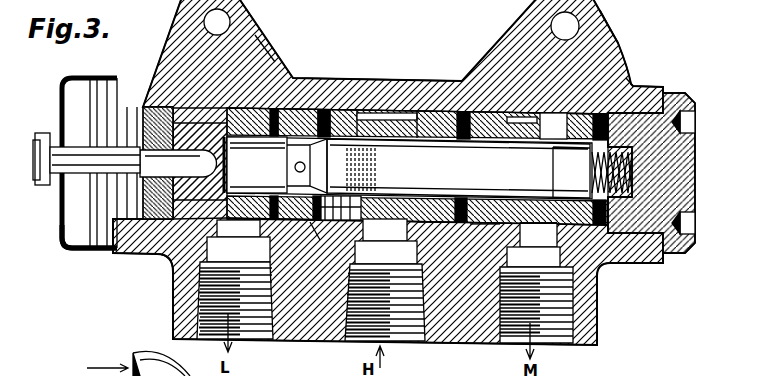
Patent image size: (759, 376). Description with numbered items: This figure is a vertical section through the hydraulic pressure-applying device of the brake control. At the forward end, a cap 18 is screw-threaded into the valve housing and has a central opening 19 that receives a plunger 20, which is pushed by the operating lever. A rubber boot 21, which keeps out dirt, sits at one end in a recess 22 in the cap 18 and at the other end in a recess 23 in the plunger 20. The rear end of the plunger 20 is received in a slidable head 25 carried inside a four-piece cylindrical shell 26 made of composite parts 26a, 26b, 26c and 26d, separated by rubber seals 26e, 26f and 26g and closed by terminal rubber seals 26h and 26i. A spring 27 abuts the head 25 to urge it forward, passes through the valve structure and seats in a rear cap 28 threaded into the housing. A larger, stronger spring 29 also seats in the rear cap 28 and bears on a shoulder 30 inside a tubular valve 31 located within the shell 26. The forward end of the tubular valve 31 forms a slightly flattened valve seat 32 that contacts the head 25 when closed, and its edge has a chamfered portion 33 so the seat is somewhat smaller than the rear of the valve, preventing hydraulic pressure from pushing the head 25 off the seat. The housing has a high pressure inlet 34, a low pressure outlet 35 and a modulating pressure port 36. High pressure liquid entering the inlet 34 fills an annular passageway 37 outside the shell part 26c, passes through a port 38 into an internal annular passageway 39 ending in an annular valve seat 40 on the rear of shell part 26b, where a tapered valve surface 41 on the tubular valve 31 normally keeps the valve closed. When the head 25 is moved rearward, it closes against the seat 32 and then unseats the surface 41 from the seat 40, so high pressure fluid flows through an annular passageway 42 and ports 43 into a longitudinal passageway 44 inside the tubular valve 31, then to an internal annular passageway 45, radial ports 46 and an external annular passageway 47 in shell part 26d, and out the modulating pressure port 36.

The cap 18 is at (143, 103).
The central opening 19 is at (100, 200).
The plunger 20 is at (37, 143).
The rubber boot 21 is at (60, 82).
The recess 22 is at (90, 93).
The recess 23 is at (37, 167).
The slidable head 25 is at (150, 225).
The cylindrical shell 26 is at (487, 40).
The shell part 26a is at (300, 78).
The shell part 26b is at (347, 78).
The shell part 26c is at (397, 122).
The shell part 26d is at (490, 110).
The rubber seal 26e is at (297, 108).
The rubber seal 26f is at (354, 105).
The rubber seal 26g is at (462, 112).
The terminal rubber seal 26h is at (182, 110).
The terminal rubber seal 26i is at (630, 83).
The spring 27 is at (635, 178).
The rear cap 28 is at (677, 147).
The spring 29 is at (613, 197).
The shoulder 30 is at (610, 265).
The tubular valve 31 is at (490, 210).
The valve seat 32 is at (170, 240).
The chamfered portion 33 is at (265, 50).
The high pressure inlet 34 is at (402, 341).
The low pressure outlet 35 is at (258, 334).
The modulating pressure port 36 is at (570, 363).
The annular passageway 37 is at (400, 221).
The port 38 is at (352, 222).
The internal annular passageway 39 is at (350, 209).
The annular valve seat 40 is at (320, 212).
The tapered valve surface 41 is at (313, 247).
The annular passageway 42 is at (316, 232).
The ports 43 is at (294, 164).
The longitudinal passageway 44 is at (496, 150).
The internal annular passageway 45 is at (623, 60).
The radial ports 46 is at (597, 285).
The external annular passageway 47 is at (518, 222).